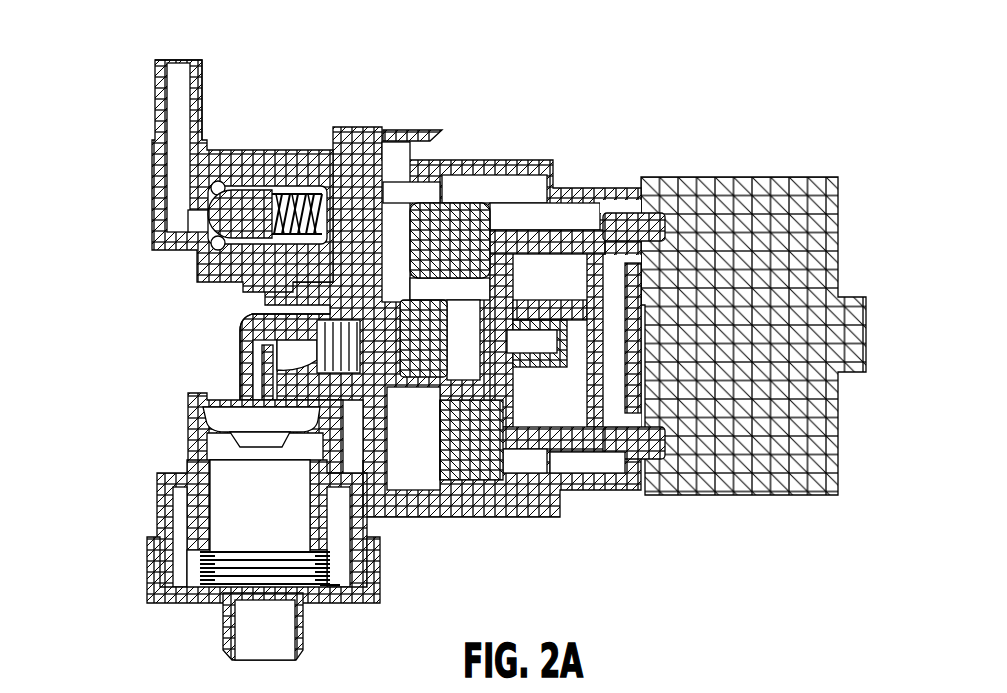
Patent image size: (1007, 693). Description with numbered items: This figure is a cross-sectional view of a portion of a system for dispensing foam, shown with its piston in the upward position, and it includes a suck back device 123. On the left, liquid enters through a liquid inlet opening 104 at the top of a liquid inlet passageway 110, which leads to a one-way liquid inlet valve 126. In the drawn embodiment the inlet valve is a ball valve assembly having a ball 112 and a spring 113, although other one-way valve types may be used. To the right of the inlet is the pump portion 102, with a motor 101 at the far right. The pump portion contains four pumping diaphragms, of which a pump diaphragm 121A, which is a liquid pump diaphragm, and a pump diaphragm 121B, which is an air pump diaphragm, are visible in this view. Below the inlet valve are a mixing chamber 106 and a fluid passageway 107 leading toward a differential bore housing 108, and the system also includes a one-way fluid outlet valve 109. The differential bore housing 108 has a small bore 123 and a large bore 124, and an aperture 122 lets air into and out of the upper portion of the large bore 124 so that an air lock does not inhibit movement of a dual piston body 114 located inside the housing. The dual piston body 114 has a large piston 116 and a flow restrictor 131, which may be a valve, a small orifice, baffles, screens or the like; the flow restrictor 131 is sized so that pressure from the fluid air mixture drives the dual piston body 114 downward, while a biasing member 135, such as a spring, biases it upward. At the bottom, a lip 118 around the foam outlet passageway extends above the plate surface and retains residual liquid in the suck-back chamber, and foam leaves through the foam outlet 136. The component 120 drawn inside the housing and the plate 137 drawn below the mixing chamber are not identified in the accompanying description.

The mounting block 101 is at (736, 232).
The valve body 102 is at (590, 98).
The inlet port 104 is at (184, 60).
The pilot valve housing 106 is at (300, 325).
The pilot valve stem 107 is at (265, 390).
The pilot valve assembly 108 is at (160, 372).
The passage 109 is at (330, 447).
The inlet fitting 110 is at (158, 118).
The check valve piston 112 is at (238, 215).
The main piston 113 is at (322, 205).
The spring 114 is at (205, 560).
The pressure regulating piston 116 is at (245, 527).
The regulator housing 118 is at (190, 443).
The filter cage 120 is at (338, 346).
The upper chamber 121A is at (400, 232).
The lower chamber 121B is at (423, 440).
The regulator body 122 is at (178, 487).
The regulator assembly 123 is at (95, 426).
The cap assembly 124 is at (118, 565).
The check valve spring 126 is at (296, 45).
The passage 131 is at (372, 480).
The seat 135 is at (320, 582).
The outlet nozzle 136 is at (233, 660).
The diaphragm plate 137 is at (205, 410).